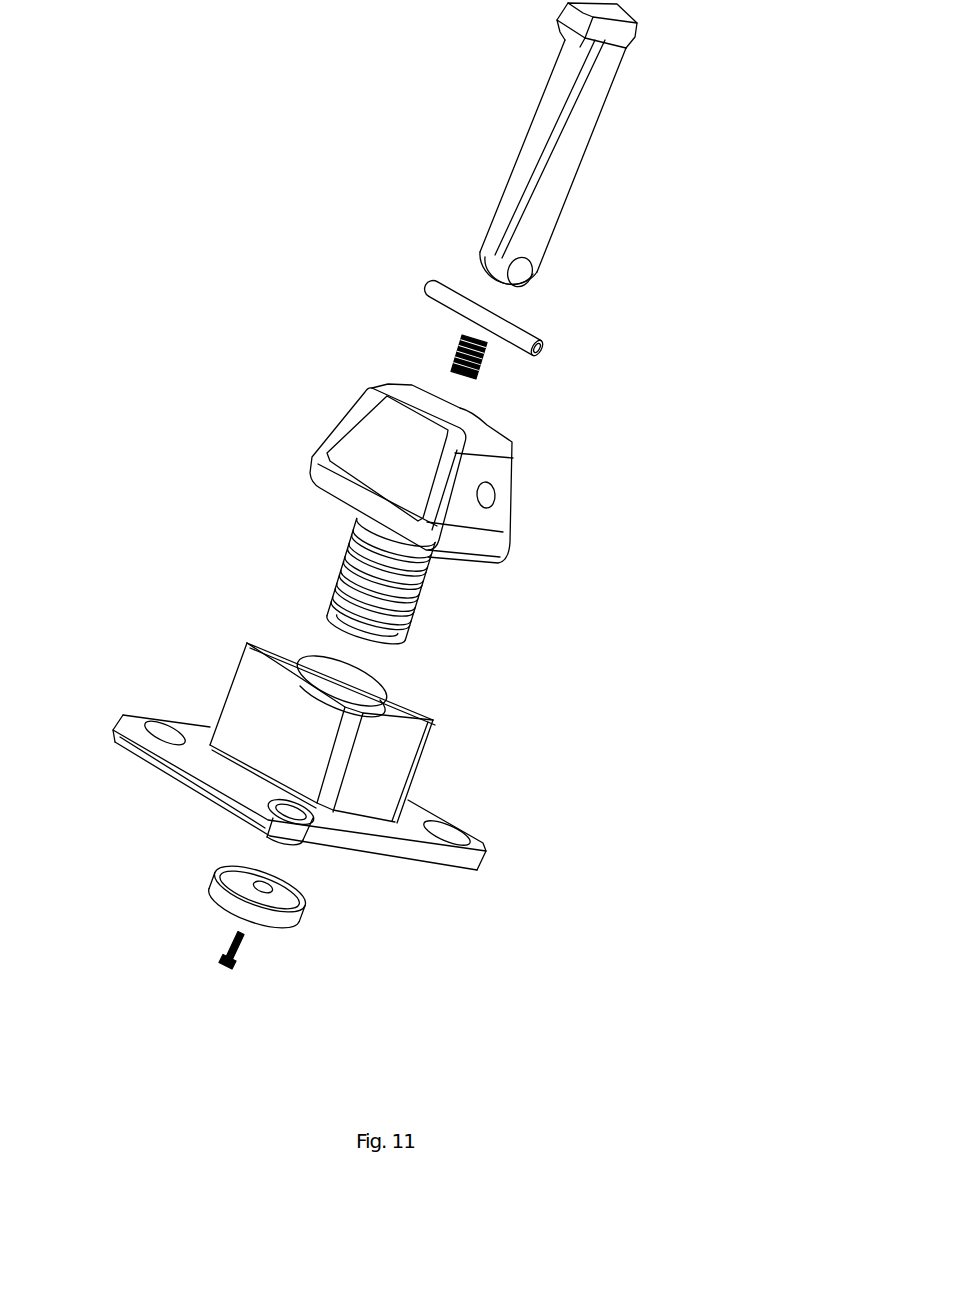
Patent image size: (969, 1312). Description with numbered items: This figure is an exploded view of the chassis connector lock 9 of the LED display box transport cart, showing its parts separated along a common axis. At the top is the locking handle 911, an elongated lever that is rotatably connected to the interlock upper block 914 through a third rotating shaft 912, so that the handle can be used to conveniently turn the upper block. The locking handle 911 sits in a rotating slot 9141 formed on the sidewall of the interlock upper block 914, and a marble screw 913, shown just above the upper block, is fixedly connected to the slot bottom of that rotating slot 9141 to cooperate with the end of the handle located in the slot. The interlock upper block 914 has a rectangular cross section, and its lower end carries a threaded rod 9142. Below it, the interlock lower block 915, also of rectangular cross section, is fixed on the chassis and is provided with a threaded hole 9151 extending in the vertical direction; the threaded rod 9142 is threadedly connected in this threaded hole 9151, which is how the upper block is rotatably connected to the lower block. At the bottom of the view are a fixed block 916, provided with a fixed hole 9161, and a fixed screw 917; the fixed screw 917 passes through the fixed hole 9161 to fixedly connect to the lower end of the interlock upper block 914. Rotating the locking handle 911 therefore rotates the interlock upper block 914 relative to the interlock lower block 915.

The hinge assembly 9 is at (222, 175).
The locking handle 911 is at (555, 190).
The third rotating shaft 912 is at (520, 333).
The marble screw 913 is at (462, 347).
The interlock upper block 914 is at (488, 478).
The rotating slot 9141 is at (455, 405).
The threaded rod 9142 is at (460, 413).
The interlock lower block 915 is at (390, 774).
The threaded hole 9151 is at (352, 694).
The fixed block 916 is at (290, 917).
The fixed hole 9161 is at (252, 886).
The fixed screw 917 is at (230, 963).